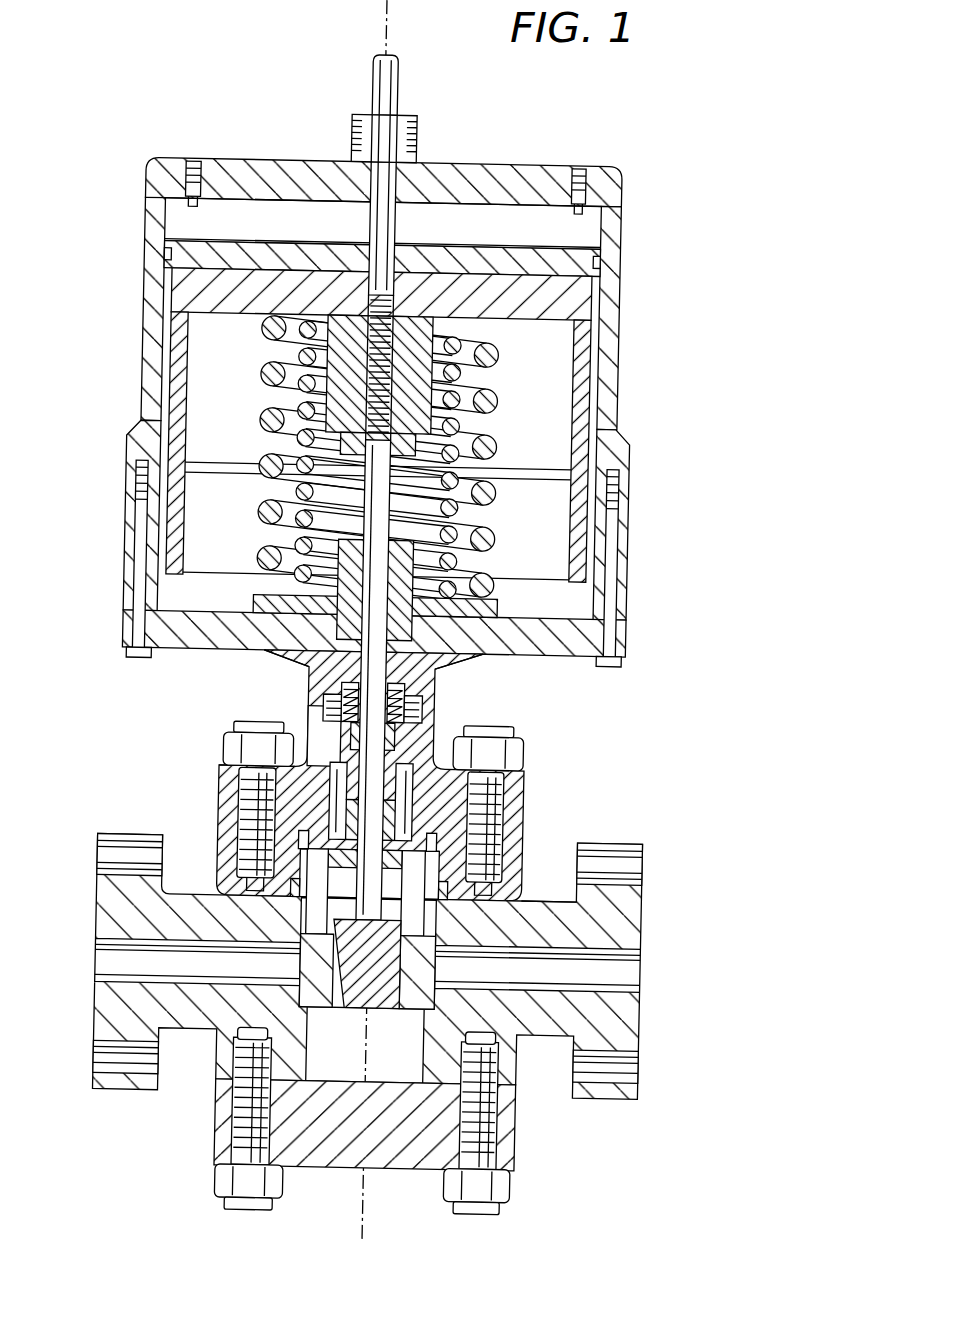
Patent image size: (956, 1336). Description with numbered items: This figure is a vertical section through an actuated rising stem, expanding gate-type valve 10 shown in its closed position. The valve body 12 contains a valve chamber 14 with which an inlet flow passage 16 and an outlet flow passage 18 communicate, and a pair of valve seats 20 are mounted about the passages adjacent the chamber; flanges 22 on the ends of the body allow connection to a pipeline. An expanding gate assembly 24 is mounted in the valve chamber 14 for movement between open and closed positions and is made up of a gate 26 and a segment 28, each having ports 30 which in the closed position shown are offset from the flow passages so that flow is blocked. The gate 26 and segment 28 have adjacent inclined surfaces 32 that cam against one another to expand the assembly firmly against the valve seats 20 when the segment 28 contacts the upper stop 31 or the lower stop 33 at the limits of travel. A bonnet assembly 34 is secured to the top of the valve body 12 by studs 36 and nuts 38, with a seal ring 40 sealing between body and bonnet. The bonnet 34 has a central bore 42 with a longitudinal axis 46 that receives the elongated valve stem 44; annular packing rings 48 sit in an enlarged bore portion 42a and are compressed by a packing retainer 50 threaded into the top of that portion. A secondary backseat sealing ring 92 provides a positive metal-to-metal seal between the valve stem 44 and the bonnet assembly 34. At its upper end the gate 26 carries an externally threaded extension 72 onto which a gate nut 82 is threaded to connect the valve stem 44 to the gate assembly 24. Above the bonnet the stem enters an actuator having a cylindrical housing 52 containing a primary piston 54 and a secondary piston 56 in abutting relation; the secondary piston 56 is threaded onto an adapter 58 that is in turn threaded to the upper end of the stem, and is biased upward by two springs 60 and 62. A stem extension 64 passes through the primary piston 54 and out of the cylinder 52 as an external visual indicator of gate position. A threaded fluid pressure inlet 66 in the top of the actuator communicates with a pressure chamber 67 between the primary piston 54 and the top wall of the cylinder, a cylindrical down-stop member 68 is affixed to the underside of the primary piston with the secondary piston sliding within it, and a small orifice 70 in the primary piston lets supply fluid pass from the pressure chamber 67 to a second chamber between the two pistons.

The valve 10 is at (391, 412).
The valve body 12 is at (641, 895).
The valve chamber 14 is at (417, 1068).
The inlet flow passage 16 is at (137, 970).
The outlet flow passage 18 is at (612, 965).
The valve seats 20 is at (343, 1001).
The flanges 22 is at (110, 890).
The expanding gate assembly 24 is at (419, 881).
The gate 26 is at (401, 995).
The segment 28 is at (352, 964).
The ports 30 is at (549, 885).
The upper stop 31 is at (308, 858).
The inclined surfaces 32 is at (312, 876).
The lower stop 33 is at (405, 1078).
The bonnet assembly 34 is at (453, 795).
The studs 36 is at (507, 735).
The nuts 38 is at (247, 744).
The seal ring 40 is at (484, 840).
The central bore 42 is at (402, 720).
The enlarged bore portion 42a is at (412, 700).
The valve stem 44 is at (346, 666).
The longitudinal axis 46 is at (375, 5).
The packing rings 48 is at (341, 701).
The packing retainer 50 is at (145, 397).
The cylindrical housing 52 is at (142, 252).
The primary piston 54 is at (573, 258).
The secondary piston 56 is at (541, 279).
The adapter 58 is at (413, 381).
The spring 60 is at (479, 403).
The spring 62 is at (436, 439).
The stem extension 64 is at (400, 140).
The fluid pressure inlet 66 is at (183, 169).
The pressure chamber 67 is at (506, 236).
The cylindrical down-stop member 68 is at (175, 359).
The small orifice 70 is at (246, 267).
The externally threaded extension 72 is at (481, 820).
The gate nut 82 is at (338, 776).
The secondary backseat sealing ring 92 is at (398, 753).